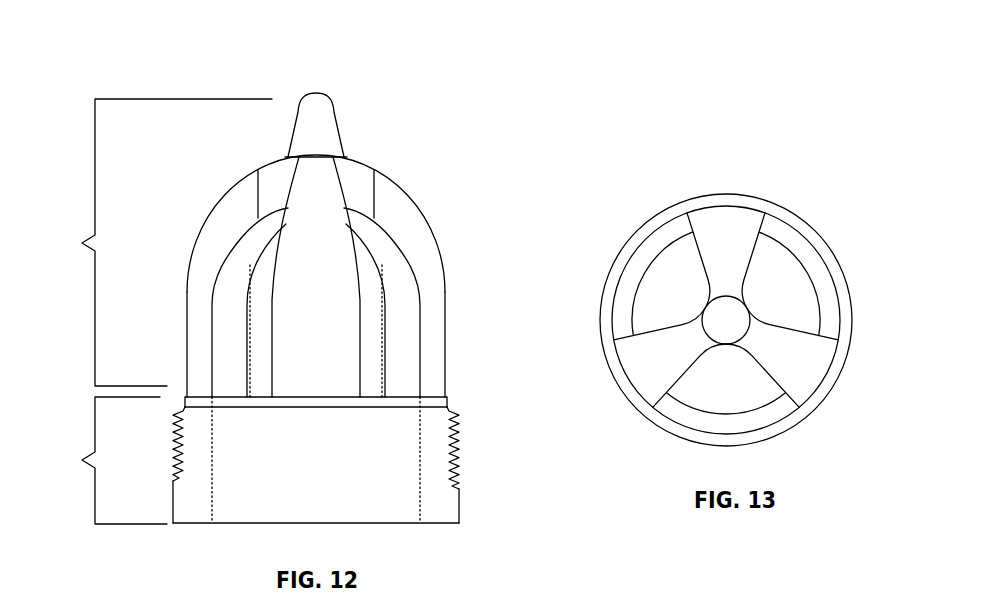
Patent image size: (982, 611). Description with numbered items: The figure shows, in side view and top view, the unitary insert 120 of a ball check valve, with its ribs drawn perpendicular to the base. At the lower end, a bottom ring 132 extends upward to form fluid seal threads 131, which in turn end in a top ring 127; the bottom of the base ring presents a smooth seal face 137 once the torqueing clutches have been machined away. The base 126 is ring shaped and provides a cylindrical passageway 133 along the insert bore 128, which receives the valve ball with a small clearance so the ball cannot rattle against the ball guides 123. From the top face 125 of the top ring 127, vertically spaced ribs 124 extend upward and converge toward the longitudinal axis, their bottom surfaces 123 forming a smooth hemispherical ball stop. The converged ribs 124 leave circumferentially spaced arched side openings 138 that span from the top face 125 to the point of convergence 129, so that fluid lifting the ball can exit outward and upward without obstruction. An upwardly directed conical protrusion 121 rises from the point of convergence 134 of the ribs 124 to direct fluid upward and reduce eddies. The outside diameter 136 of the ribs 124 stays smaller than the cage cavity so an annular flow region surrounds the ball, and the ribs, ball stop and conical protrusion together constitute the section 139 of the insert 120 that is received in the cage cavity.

In FIG. 12, the unitary insert 120 is at (423, 96).
In FIG. 13, the unitary insert 120 is at (782, 170).
In FIG. 12, the conical protrusion 121 is at (320, 108).
In FIG. 13, the conical protrusion 121 is at (711, 330).
In FIG. 12, the bottom surface of the ribs (ball guides) 123 is at (221, 280).
In FIG. 12, the ribs 124 is at (213, 233).
In FIG. 13, the ribs 124 is at (708, 260).
In FIG. 12, the top face of the top ring 125 is at (430, 395).
In FIG. 13, the top face of the top ring 125 is at (637, 265).
In FIG. 12, the base 126 is at (106, 460).
In FIG. 12, the top ring 127 is at (450, 403).
In FIG. 12, the insert bore 128 is at (435, 501).
In FIG. 12, the point of convergence 129 is at (285, 167).
In FIG. 12, the fluid seal threads 131 is at (461, 452).
In FIG. 12, the bottom ring 132 is at (190, 504).
In FIG. 12, the cylindrical passageway 133 is at (253, 513).
In FIG. 12, the point of convergence of the ribs 134 is at (328, 152).
In FIG. 13, the point of convergence of the ribs 134 is at (699, 307).
In FIG. 12, the outside diameter of the insert ribs 136 is at (445, 321).
In FIG. 12, the seal face on the bottom of the insert 137 is at (440, 525).
In FIG. 12, the arched side openings 138 is at (259, 324).
In FIG. 13, the arched side openings 138 is at (651, 300).
In FIG. 12, the ribs, ball stop and conical protrusion forming section 139 is at (158, 242).